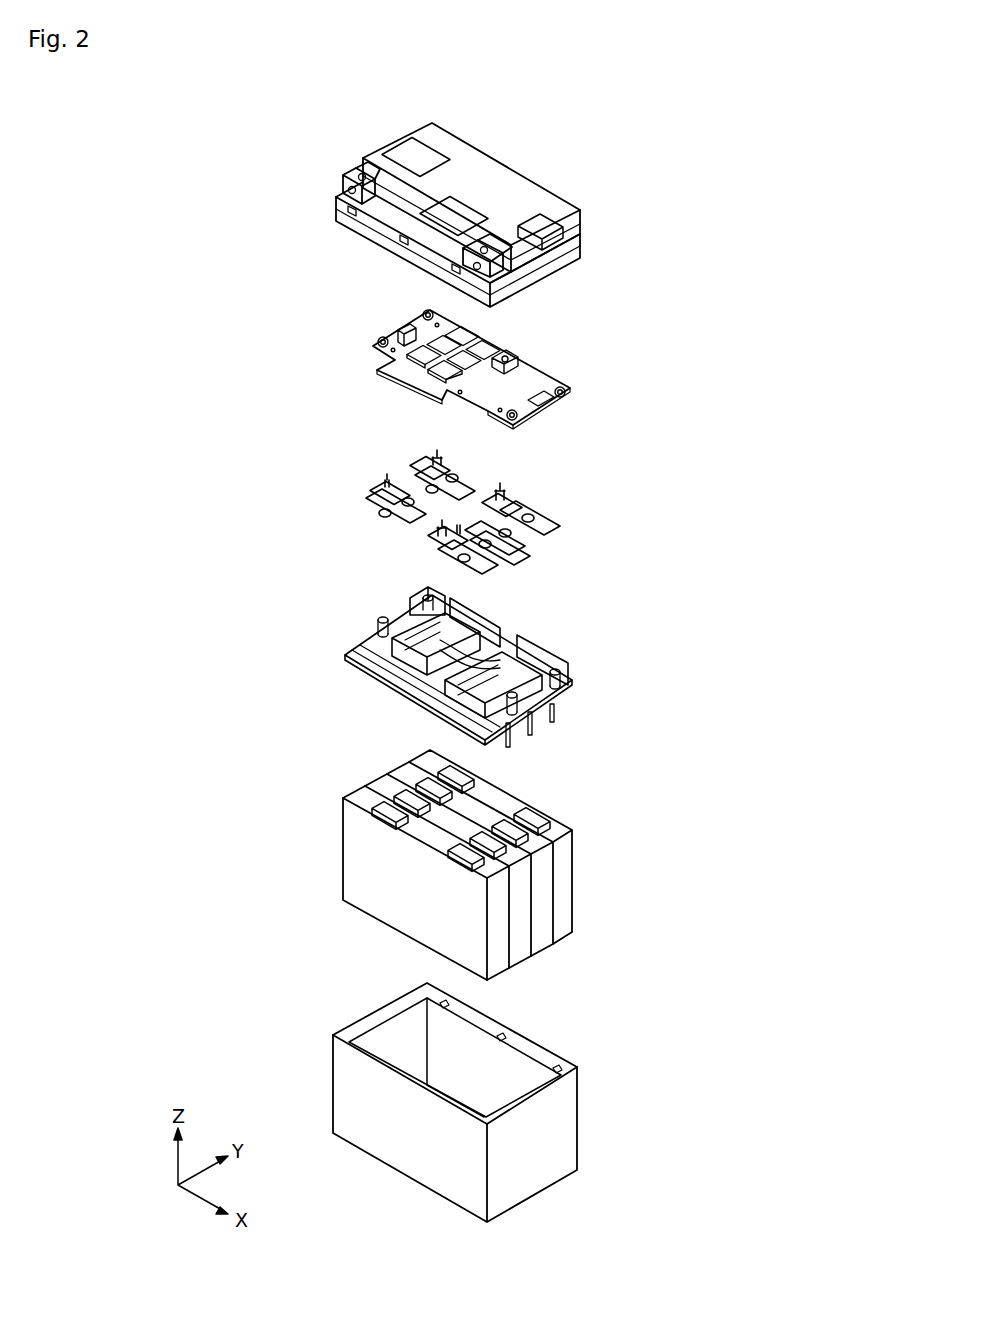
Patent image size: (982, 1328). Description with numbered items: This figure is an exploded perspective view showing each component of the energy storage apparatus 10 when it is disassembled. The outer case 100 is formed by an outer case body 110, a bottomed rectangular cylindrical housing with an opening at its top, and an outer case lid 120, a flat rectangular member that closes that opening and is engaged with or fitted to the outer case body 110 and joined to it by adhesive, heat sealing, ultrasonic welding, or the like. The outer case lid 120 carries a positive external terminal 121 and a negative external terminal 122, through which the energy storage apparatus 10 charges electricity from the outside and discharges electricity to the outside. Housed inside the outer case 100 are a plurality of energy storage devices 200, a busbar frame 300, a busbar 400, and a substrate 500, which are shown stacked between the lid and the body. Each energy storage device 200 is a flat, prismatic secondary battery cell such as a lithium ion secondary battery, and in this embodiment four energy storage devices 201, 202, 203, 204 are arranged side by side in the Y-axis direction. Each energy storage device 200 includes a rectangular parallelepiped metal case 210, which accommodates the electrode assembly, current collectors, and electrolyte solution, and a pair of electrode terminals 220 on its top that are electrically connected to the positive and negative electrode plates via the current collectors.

The energy storage apparatus 10 is at (570, 135).
The outer case 100 is at (600, 212).
The outer case body 110 is at (583, 1115).
The outer case lid 120 is at (584, 232).
The positive external terminal 121 is at (482, 239).
The negative external terminal 122 is at (357, 172).
The energy storage device 200 is at (500, 892).
The energy storage device 201 is at (497, 967).
The energy storage device 202 is at (518, 948).
The energy storage device 203 is at (540, 937).
The energy storage device 204 is at (563, 923).
The case 210 is at (400, 913).
The electrode terminals 220 is at (363, 796).
The busbar frame 300 is at (578, 678).
The busbar 400 is at (557, 515).
The substrate 500 is at (549, 373).